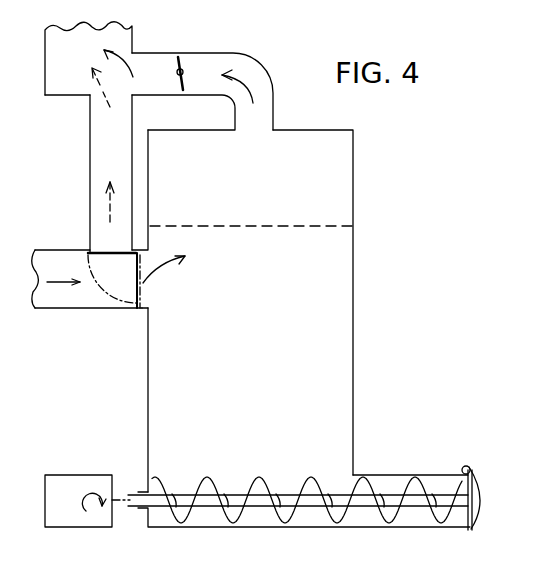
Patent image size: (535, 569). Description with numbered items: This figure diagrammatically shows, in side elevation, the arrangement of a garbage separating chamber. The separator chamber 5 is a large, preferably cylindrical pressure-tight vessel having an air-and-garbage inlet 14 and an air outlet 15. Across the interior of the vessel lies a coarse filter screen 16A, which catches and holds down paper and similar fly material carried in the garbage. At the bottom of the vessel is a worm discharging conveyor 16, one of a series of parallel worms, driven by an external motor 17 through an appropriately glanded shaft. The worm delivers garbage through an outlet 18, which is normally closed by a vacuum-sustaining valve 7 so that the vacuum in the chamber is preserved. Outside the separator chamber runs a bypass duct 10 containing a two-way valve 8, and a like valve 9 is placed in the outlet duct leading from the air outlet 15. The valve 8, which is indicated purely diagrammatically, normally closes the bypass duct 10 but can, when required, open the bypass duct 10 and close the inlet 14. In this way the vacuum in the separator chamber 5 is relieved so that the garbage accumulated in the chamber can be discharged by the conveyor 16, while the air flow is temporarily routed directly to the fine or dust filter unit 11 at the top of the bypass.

The separator chamber 5 is at (357, 267).
The vacuum-sustaining valve 7 is at (482, 491).
The two-way valve 8 is at (110, 262).
The valve 9 is at (182, 60).
The bypass duct 10 is at (102, 160).
The fine or dust filter unit 11 is at (135, 30).
The air-and-garbage inlet 14 is at (146, 310).
The air outlet 15 is at (273, 130).
The worm discharging conveyor 16 is at (263, 478).
The coarse filter screen 16A is at (290, 223).
The external motor 17 is at (69, 475).
The outlet 18 is at (420, 475).